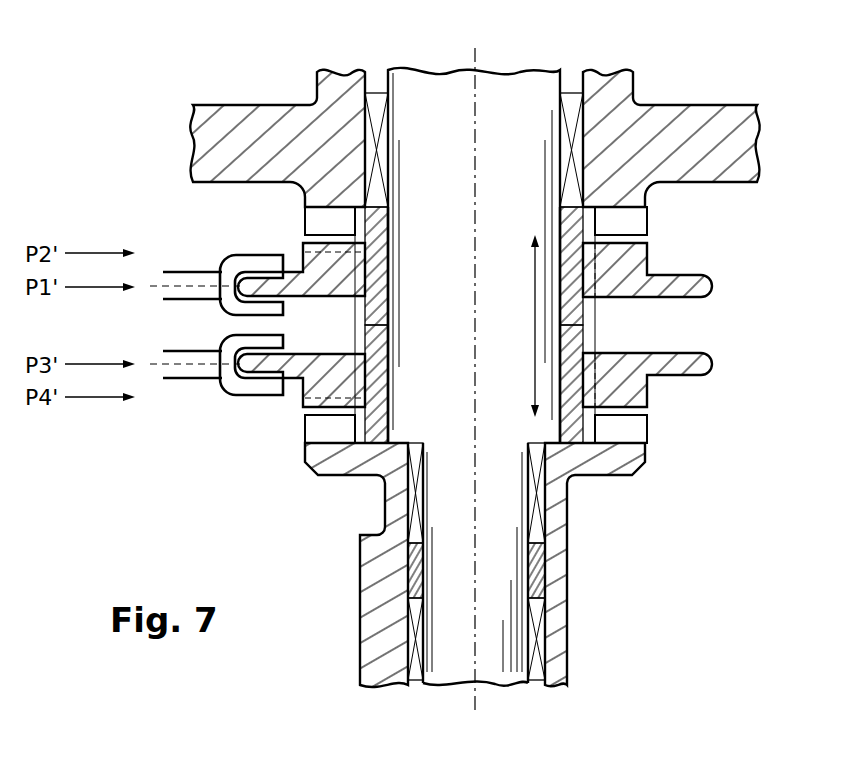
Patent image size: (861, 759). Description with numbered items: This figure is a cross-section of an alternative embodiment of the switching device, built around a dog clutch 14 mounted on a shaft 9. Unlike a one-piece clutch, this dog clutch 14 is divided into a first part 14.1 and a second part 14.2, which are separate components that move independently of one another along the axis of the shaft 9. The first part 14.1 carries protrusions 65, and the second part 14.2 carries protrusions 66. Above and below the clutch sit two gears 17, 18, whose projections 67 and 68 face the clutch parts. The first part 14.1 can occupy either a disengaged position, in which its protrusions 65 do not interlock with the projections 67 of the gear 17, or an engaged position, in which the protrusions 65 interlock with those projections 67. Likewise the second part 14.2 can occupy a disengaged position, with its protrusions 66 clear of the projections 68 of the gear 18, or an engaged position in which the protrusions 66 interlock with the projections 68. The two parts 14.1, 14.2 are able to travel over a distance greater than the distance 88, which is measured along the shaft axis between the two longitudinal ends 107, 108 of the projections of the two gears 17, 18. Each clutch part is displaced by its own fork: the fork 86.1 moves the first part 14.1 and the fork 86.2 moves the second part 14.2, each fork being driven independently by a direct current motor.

The gear 17 is at (215, 141).
The gear 18 is at (338, 470).
The dog clutch 14 is at (416, 235).
The shaft 9 is at (507, 222).
The first part 14.1 is at (345, 283).
The second part 14.2 is at (345, 368).
The protrusions 65 is at (313, 243).
The protrusions 66 is at (312, 402).
The projections 67 is at (320, 222).
The projections 68 is at (312, 430).
The fork 86.1 is at (193, 275).
The fork 86.2 is at (191, 376).
The distance 88 is at (533, 330).
The longitudinal end 107 is at (635, 220).
The longitudinal end 108 is at (640, 430).